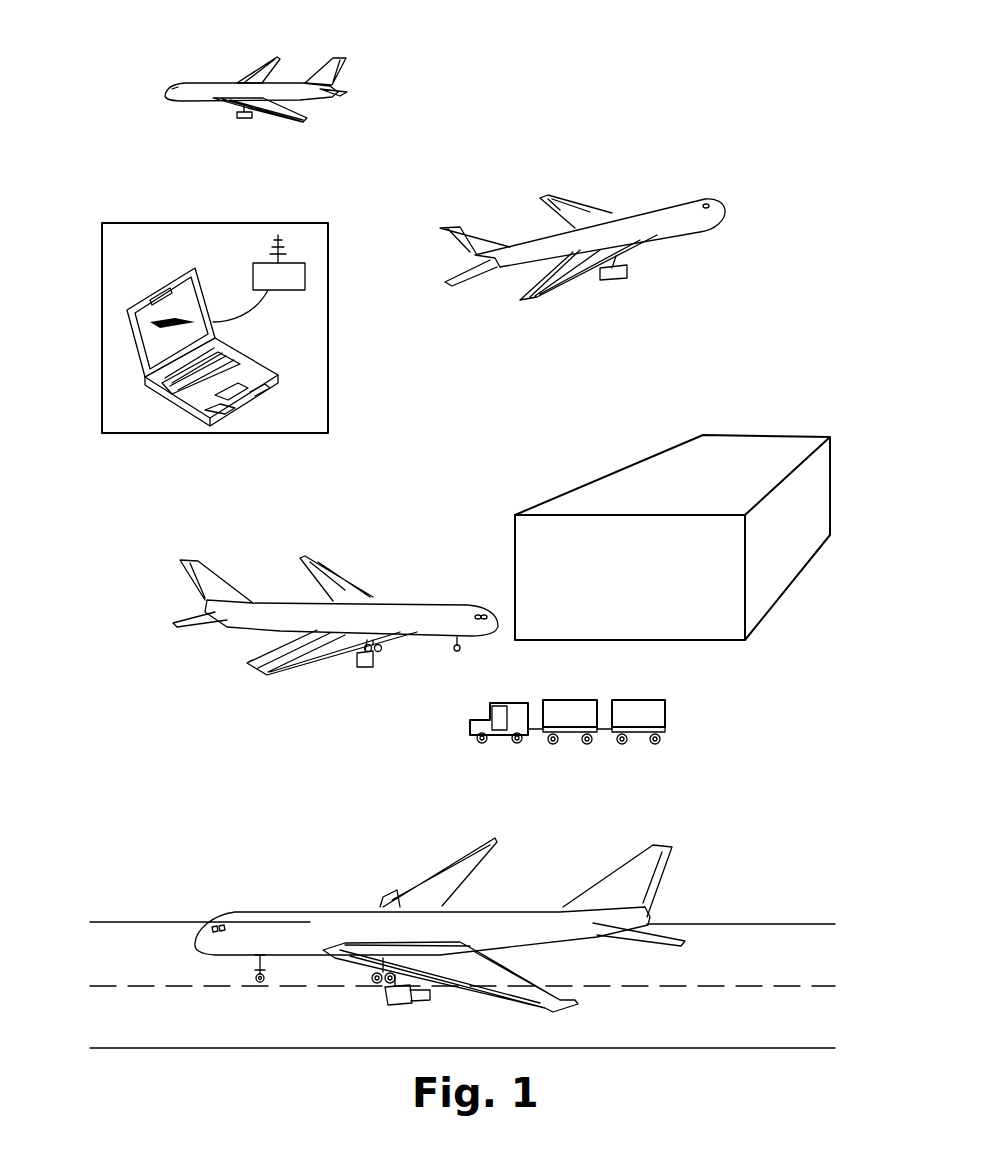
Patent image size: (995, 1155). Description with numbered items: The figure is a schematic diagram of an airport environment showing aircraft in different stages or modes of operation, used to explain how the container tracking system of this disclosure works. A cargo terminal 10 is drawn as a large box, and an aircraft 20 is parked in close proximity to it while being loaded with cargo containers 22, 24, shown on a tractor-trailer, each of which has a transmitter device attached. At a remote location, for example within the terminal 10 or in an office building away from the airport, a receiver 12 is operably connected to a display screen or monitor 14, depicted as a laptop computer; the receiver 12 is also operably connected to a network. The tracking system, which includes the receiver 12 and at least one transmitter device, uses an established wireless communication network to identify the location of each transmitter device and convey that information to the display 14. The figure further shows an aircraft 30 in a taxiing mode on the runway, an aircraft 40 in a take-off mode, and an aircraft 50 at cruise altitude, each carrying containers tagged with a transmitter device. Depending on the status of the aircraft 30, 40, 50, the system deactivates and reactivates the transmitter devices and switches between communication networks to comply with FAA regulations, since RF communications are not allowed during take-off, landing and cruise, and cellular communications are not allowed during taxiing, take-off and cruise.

The cargo terminal 10 is at (600, 485).
The receiver 12 is at (292, 290).
The display screen or monitor 14 is at (152, 297).
The aircraft 20 is at (271, 572).
The cargo container 22 is at (566, 700).
The cargo container 24 is at (634, 700).
The aircraft in taxiing mode 30 is at (692, 844).
The aircraft in take-off mode 40 is at (496, 197).
The aircraft at cruise altitude 50 is at (183, 66).